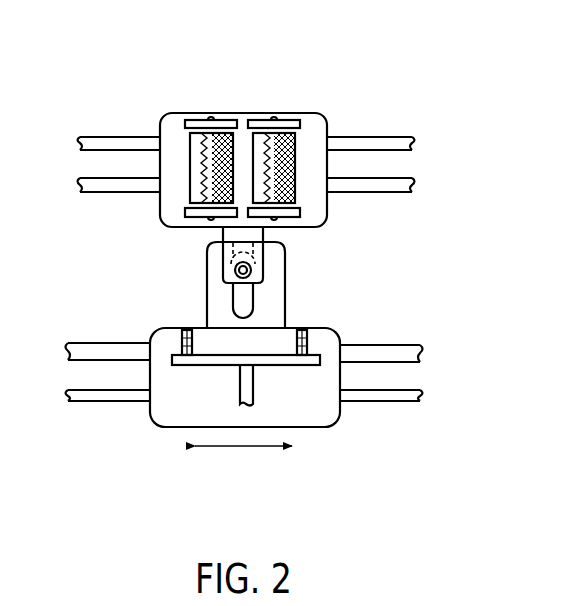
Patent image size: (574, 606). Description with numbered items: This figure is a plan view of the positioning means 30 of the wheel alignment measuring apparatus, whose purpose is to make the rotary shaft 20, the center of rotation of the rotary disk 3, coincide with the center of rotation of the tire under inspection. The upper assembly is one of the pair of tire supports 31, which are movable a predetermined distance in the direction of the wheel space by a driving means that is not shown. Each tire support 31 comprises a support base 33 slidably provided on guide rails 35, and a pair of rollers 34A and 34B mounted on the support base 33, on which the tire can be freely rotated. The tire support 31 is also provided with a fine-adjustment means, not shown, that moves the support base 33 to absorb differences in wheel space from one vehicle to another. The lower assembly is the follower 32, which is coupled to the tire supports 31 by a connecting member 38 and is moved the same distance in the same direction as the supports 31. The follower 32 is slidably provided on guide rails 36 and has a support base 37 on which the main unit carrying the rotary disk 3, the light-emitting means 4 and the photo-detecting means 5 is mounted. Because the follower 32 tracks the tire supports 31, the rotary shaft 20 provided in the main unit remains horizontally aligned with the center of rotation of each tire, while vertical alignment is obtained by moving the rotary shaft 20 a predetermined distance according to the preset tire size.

The rotary disk 3 is at (311, 365).
The light-emitting means 4 is at (178, 352).
The photo-detecting means 5 is at (187, 330).
The rotary shaft 20 is at (240, 388).
The positioning means 30 is at (448, 270).
The tire supports 31 is at (288, 100).
The follower 32 is at (322, 450).
The support base 33 is at (172, 118).
The roller 34A is at (208, 190).
The roller 34B is at (290, 152).
The guide rails 35 is at (98, 186).
The guide rails 36 is at (400, 392).
The support base 37 is at (158, 372).
The connecting bracket 38 is at (305, 283).